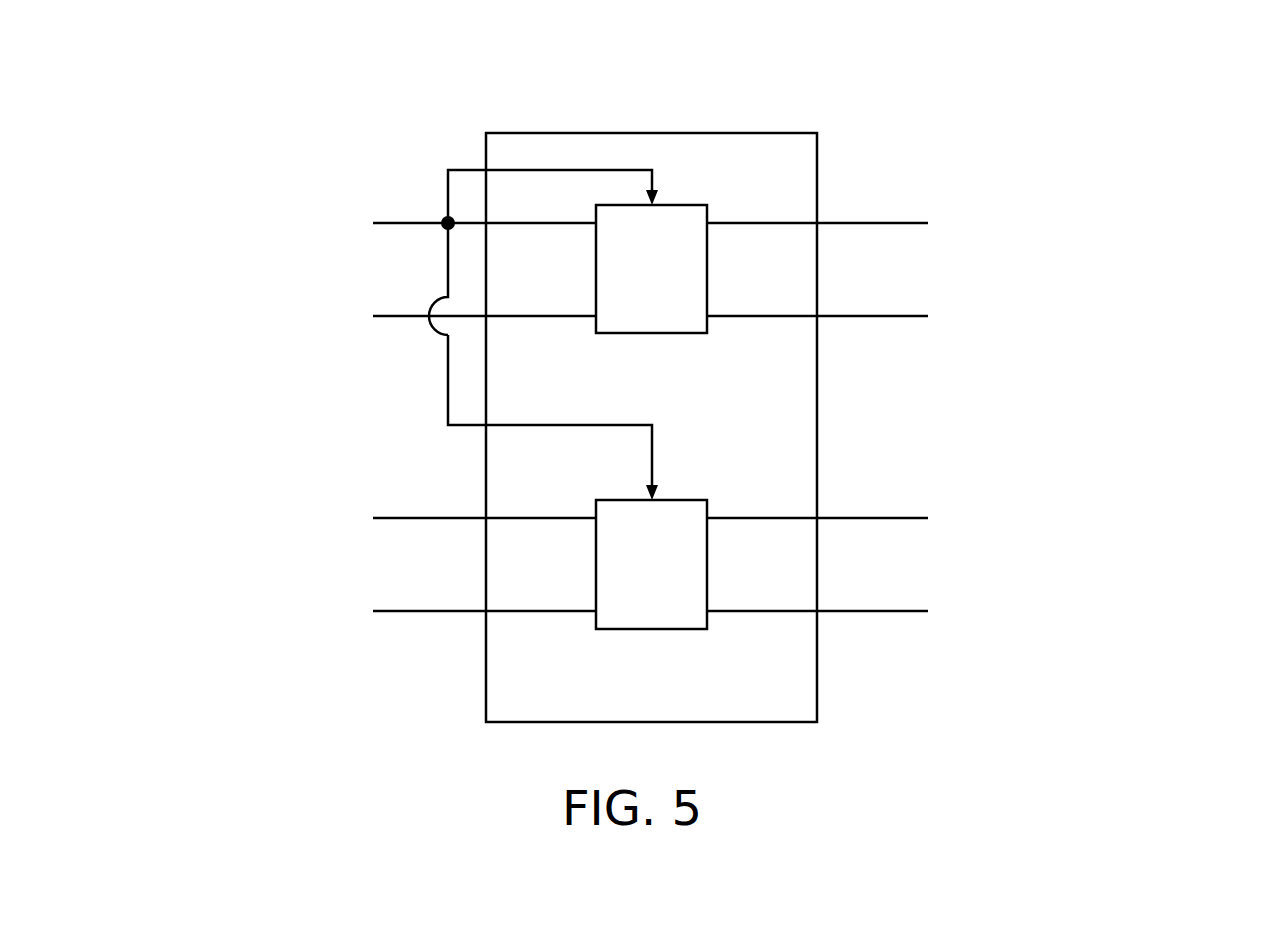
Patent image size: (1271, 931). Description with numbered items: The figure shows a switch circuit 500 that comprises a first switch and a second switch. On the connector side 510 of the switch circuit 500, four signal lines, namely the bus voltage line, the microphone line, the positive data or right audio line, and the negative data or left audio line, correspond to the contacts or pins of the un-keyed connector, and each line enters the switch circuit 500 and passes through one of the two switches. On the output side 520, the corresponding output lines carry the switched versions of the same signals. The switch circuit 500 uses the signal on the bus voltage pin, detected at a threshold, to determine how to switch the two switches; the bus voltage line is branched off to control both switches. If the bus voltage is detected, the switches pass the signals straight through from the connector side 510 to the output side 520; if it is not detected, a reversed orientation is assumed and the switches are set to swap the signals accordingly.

The switch circuit 500 is at (760, 94).
The connector side 510 is at (357, 168).
The output side 520 is at (1012, 155).